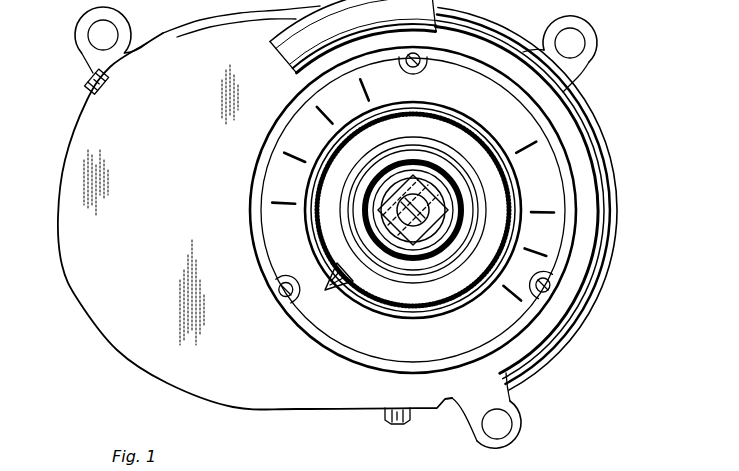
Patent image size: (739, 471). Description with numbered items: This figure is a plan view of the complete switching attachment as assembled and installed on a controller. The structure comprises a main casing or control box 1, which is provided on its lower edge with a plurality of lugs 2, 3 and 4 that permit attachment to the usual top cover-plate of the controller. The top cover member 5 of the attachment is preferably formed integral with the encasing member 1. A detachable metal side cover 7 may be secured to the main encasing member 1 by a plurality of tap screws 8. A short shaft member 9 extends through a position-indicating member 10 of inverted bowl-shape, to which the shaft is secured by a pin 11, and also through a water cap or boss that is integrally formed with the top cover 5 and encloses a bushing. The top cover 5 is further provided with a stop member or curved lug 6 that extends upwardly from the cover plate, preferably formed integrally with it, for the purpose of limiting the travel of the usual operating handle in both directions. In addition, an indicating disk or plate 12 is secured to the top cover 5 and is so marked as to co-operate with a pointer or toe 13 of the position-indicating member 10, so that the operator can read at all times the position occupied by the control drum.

The main casing or control box 1 is at (617, 233).
The lug 2 is at (517, 415).
The lug 3 is at (595, 48).
The lug 4 is at (125, 22).
The top cover member 5 is at (131, 347).
The stop member or curved lug 6 is at (290, 60).
The detachable metal side cover 7 is at (303, 412).
The tap screw 8 is at (85, 84).
The short shaft member 9 is at (390, 211).
The position-indicating member 10 is at (453, 138).
The pin 11 is at (432, 185).
The indicating disk or plate 12 is at (378, 353).
The pointer or toe 13 is at (338, 307).